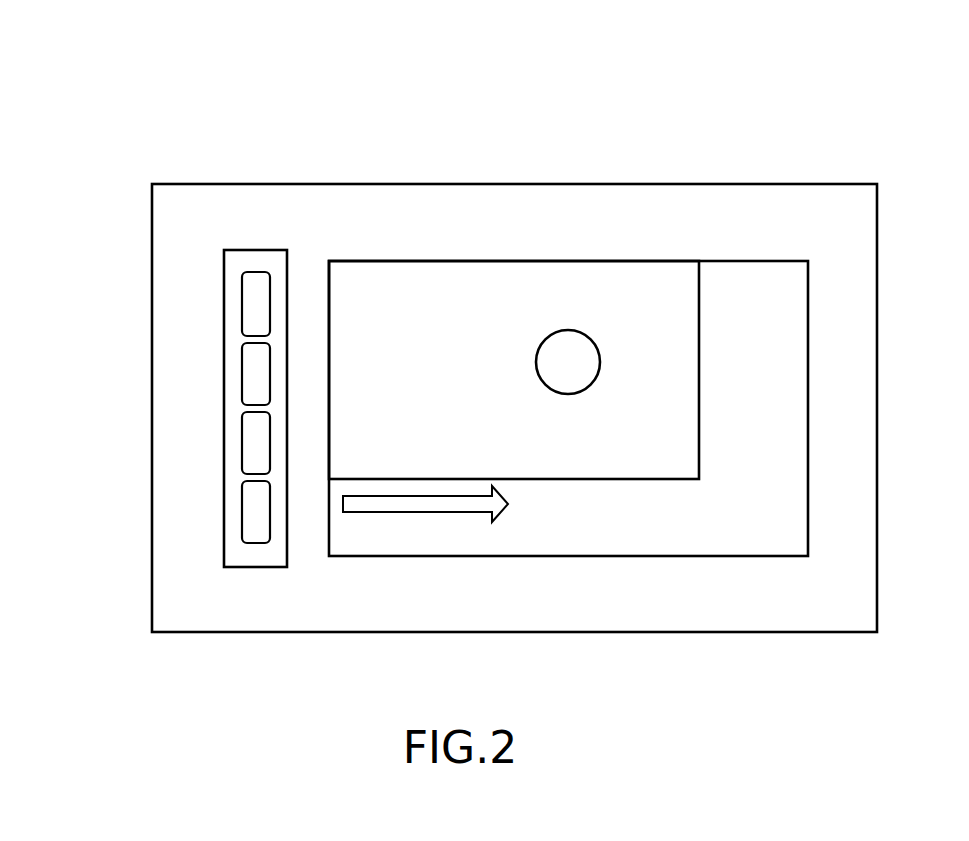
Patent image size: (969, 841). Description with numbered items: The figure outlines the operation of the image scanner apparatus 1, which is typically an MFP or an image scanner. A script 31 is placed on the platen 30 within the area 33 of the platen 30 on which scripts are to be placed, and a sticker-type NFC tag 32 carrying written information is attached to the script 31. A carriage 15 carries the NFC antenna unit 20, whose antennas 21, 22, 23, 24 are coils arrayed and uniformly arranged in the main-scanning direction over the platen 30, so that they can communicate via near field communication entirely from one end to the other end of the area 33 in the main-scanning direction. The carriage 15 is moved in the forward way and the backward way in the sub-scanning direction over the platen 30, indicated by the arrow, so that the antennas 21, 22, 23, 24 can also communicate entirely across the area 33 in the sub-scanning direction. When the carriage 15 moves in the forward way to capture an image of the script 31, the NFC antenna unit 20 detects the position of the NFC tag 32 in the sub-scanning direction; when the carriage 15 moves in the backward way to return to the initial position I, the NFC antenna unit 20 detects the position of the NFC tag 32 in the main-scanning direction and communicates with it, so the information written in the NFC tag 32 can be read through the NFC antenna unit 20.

The image scanner apparatus 1 is at (459, 123).
The platen 30 is at (216, 183).
The initial position I is at (273, 248).
The carriage 15 is at (253, 568).
The NFC antenna unit 20 is at (104, 290).
The antenna (coil) 21 is at (242, 303).
The antenna (coil) 22 is at (242, 375).
The antenna (coil) 23 is at (242, 445).
The antenna (coil) 24 is at (242, 515).
The script 31 is at (623, 480).
The NFC tag 32 is at (568, 330).
The area 33 is at (757, 260).